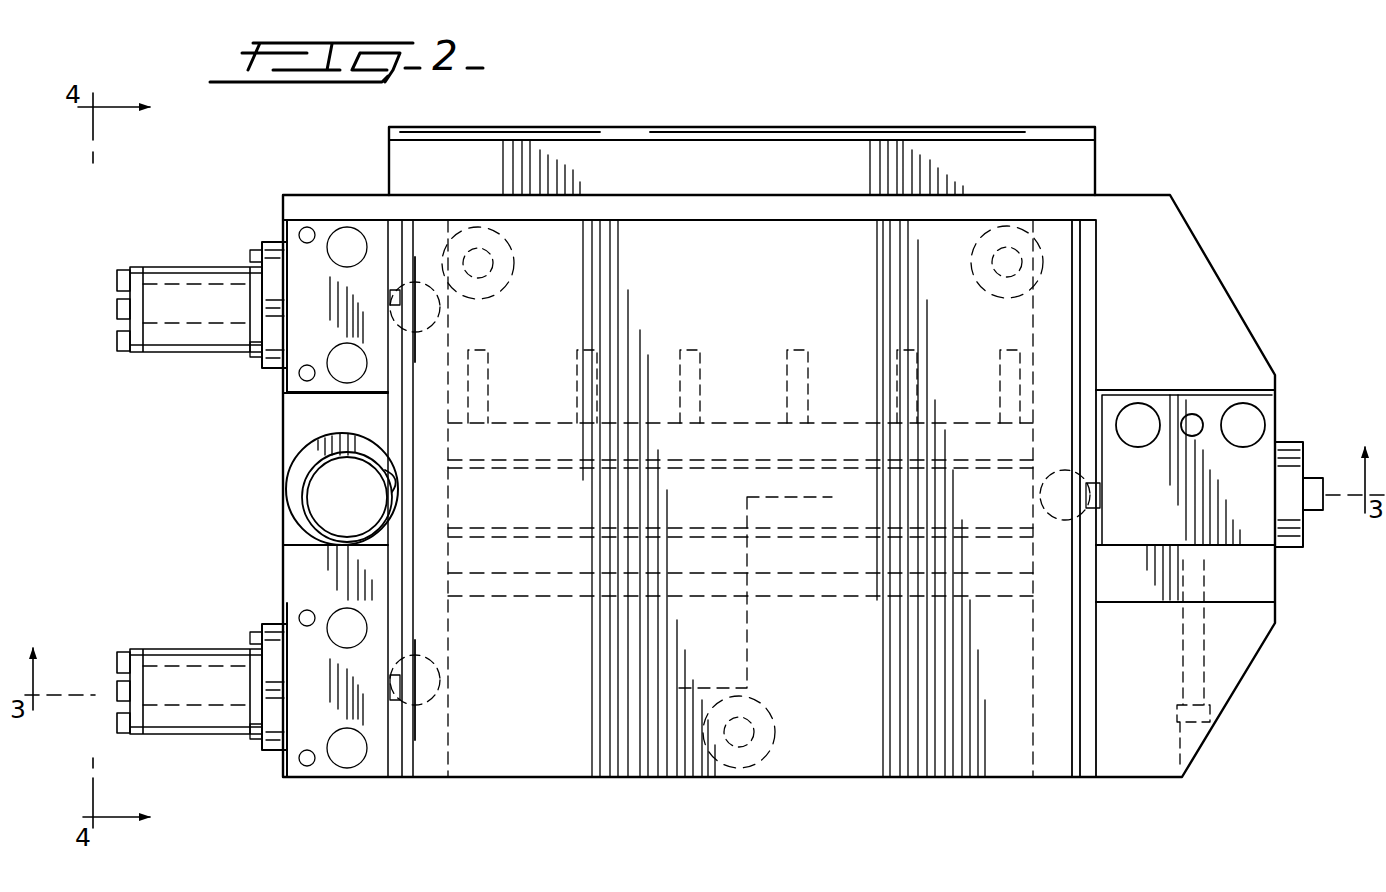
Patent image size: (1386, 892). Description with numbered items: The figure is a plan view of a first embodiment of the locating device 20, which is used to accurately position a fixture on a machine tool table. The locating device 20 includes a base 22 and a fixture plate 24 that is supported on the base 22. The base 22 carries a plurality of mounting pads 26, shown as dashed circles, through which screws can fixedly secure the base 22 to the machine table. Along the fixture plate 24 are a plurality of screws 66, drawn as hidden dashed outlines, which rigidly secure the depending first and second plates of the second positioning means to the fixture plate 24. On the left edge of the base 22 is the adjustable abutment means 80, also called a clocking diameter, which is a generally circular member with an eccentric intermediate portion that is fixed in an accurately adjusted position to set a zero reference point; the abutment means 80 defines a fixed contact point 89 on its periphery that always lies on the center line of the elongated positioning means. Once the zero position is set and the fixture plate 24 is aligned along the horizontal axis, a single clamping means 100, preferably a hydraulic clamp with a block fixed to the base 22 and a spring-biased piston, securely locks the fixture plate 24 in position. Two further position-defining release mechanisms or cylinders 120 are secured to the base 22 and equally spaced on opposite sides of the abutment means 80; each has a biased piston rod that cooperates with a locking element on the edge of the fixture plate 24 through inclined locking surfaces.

The locating device 20 is at (734, 116).
The base 22 is at (1158, 214).
The fixture plate 24 is at (851, 248).
The mounting pads 26 is at (480, 226).
The screws 66 is at (684, 370).
The adjustable abutment means 80 is at (273, 485).
The fixed contact point 89 is at (320, 440).
The clamping means 100 is at (1207, 381).
The release mechanisms 120 is at (236, 256).